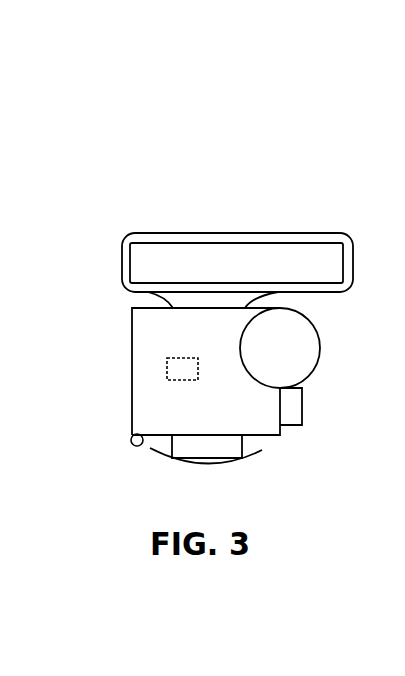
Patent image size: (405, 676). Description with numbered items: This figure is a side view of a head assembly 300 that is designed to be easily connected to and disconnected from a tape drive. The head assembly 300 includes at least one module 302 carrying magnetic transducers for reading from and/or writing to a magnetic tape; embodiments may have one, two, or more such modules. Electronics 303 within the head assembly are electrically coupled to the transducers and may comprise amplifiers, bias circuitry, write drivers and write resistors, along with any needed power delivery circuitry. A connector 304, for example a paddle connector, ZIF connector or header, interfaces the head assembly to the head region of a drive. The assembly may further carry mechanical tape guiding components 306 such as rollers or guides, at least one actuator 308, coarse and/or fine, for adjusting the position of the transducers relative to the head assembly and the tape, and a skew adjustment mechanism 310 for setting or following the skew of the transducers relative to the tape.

The head assembly 300 is at (215, 160).
The module 302 is at (243, 446).
The electronics 303 is at (167, 363).
The connector 304 is at (353, 249).
The mechanical tape guiding components 306 is at (131, 443).
The actuator 308 is at (320, 348).
The skew adjustment mechanism 310 is at (302, 405).